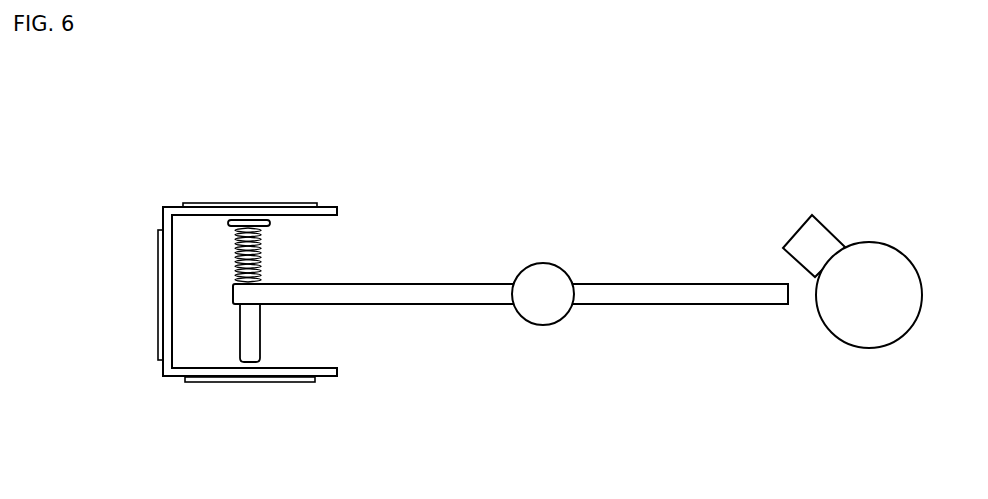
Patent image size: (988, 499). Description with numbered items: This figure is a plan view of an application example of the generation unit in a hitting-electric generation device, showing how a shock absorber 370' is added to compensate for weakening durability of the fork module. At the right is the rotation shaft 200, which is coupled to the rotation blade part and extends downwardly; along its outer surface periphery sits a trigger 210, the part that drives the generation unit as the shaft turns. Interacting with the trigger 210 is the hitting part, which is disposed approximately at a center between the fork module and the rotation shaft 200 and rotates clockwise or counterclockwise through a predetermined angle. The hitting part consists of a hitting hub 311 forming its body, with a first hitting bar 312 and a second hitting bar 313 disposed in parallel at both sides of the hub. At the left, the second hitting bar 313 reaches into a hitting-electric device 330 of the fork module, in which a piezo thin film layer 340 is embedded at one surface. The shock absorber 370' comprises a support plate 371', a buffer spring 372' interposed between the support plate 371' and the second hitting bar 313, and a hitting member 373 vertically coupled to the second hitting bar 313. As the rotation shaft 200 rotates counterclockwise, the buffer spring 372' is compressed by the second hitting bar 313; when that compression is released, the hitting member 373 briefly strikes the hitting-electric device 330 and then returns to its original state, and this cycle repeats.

The rotation shaft 200 is at (883, 325).
The trigger 210 is at (815, 235).
The hitting hub 311 is at (535, 316).
The first hitting bar 312 is at (592, 306).
The second hitting bar 313 is at (413, 305).
The hitting-electric device 330 is at (335, 208).
The piezo thin film layer 340 is at (258, 203).
The shock absorber 370' is at (142, 291).
The support plate 371' is at (176, 325).
The buffer spring 372' is at (176, 255).
The hitting member 373 is at (228, 222).